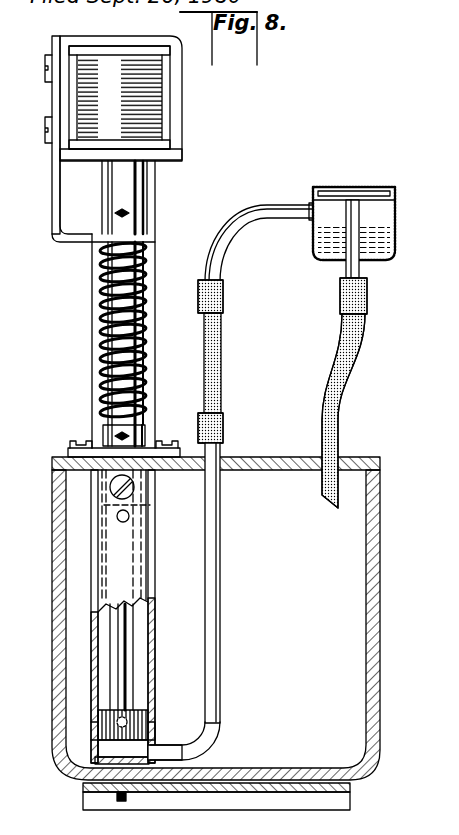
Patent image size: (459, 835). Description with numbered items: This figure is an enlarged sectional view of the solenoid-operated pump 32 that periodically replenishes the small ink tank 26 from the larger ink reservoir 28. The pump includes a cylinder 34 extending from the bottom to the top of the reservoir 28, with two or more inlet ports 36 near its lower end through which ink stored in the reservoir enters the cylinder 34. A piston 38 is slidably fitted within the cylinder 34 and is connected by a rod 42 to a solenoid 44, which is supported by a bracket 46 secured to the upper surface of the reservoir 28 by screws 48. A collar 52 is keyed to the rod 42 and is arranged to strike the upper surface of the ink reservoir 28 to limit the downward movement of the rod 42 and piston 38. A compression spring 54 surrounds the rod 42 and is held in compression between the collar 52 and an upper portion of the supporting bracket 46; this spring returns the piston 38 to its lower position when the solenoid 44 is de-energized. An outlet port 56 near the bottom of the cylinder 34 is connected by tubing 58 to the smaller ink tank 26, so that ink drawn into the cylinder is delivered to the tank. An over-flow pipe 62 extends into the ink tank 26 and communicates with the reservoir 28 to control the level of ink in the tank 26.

The ink tank 26 is at (395, 212).
The ink reservoir 28 is at (382, 565).
The solenoid-operated pump 32 is at (79, 544).
The cylinder 34 is at (156, 615).
The inlet ports 36 is at (91, 722).
The piston 38 is at (108, 733).
The rod 42 is at (130, 280).
The solenoid 44 is at (148, 102).
The bracket 46 is at (92, 268).
The screws 48 is at (72, 447).
The collar 52 is at (107, 434).
The compression spring 54 is at (102, 332).
The outlet port 56 is at (183, 752).
The tubing 58 is at (261, 210).
The over-flow pipe 62 is at (360, 345).